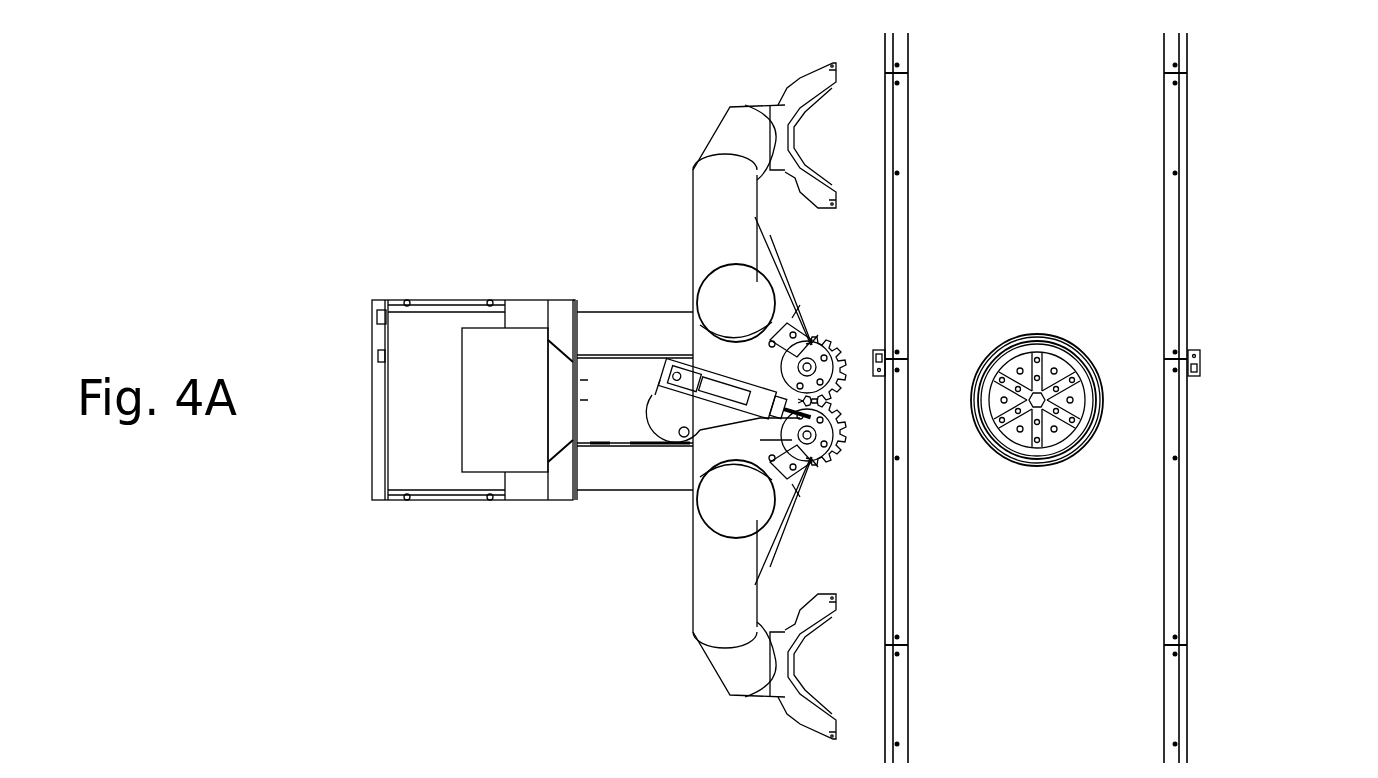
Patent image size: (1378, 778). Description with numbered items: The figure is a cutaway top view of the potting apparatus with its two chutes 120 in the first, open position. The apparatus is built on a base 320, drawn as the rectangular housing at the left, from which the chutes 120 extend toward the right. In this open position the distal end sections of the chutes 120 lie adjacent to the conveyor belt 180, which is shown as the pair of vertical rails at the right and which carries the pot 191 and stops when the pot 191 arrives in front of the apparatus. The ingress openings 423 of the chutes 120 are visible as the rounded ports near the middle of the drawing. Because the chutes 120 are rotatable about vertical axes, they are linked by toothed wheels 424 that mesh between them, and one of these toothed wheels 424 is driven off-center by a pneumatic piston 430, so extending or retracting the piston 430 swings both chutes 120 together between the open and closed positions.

The chutes 120 is at (722, 602).
The conveyor belt 180 is at (1095, 163).
The pot 191 is at (1053, 427).
The base 320 is at (527, 300).
The ingress openings 423 is at (720, 297).
The toothed wheels 424 is at (840, 447).
The pneumatic piston 430 is at (775, 410).